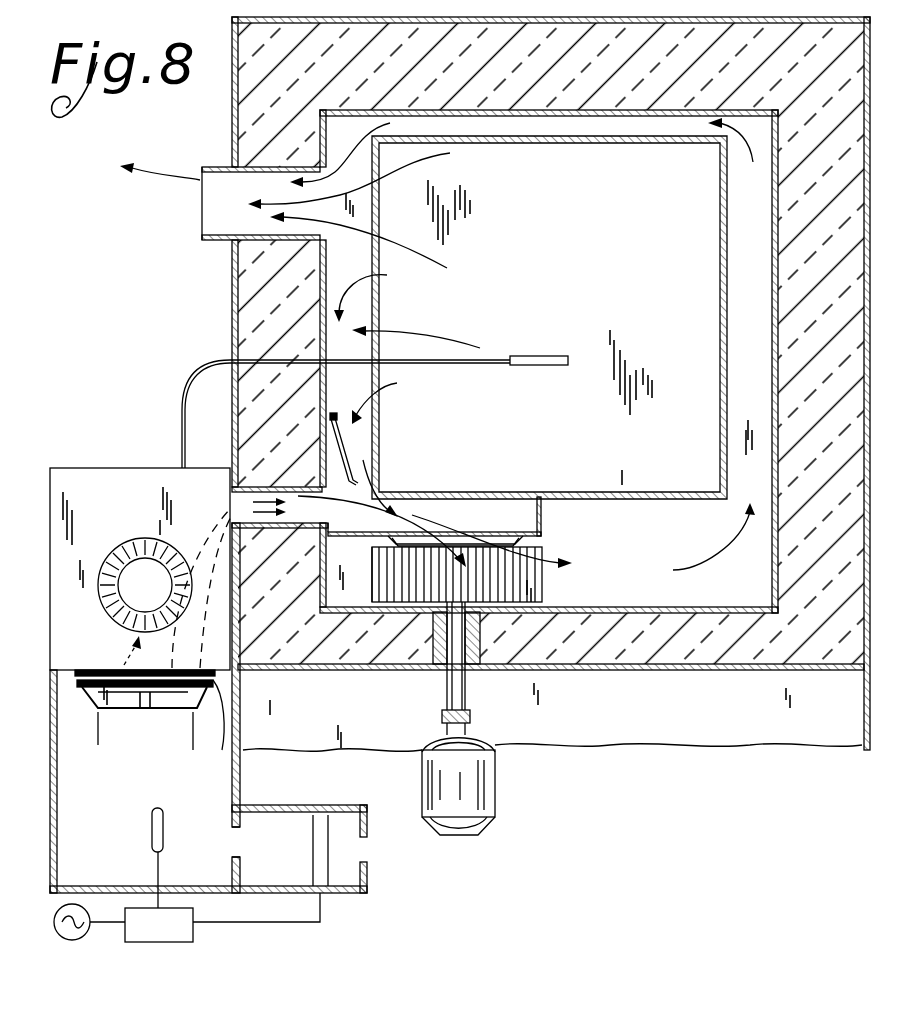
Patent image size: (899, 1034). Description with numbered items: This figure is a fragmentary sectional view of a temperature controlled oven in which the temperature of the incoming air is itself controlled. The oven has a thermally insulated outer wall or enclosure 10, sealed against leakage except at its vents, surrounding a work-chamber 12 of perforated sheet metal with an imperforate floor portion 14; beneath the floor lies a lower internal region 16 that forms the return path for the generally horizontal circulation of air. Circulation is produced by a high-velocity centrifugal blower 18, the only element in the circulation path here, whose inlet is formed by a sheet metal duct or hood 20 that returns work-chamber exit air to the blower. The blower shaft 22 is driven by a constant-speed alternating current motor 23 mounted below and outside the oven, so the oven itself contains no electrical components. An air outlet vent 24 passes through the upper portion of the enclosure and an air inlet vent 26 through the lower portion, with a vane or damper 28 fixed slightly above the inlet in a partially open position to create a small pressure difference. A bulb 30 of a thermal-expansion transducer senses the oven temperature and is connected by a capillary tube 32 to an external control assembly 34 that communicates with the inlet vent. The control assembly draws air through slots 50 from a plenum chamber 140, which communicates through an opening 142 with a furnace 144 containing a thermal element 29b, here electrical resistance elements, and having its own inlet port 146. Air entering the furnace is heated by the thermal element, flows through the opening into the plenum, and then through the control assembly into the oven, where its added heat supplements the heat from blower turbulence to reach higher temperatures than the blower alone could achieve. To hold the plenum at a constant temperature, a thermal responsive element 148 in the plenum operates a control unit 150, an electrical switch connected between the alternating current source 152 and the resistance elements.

The outer wall or enclosure 10 is at (257, 292).
The work-chamber 12 is at (592, 246).
The imperforate floor portion 14 is at (640, 492).
The lower internal region 16 is at (676, 545).
The centrifugal blower 18 is at (541, 583).
The sheet metal duct or hood 20 is at (541, 507).
The blower shaft 22 is at (462, 687).
The constant-speed alternating current motor 23 is at (467, 798).
The air outlet vent 24 is at (212, 214).
The air inlet vent 26 is at (296, 496).
The vane or damper 28 is at (339, 446).
The bulb 30 is at (535, 355).
The capillary tube 32 is at (180, 406).
The control assembly 34 is at (116, 502).
The slots 50 is at (120, 702).
The plenum chamber 140 is at (87, 783).
The opening 142 is at (236, 842).
The furnace 144 is at (284, 868).
The inlet port 146 is at (362, 843).
The thermal responsive element 148 is at (163, 822).
The control unit 150 is at (155, 925).
The alternating current source 152 is at (72, 940).
The thermal element 29b is at (320, 831).